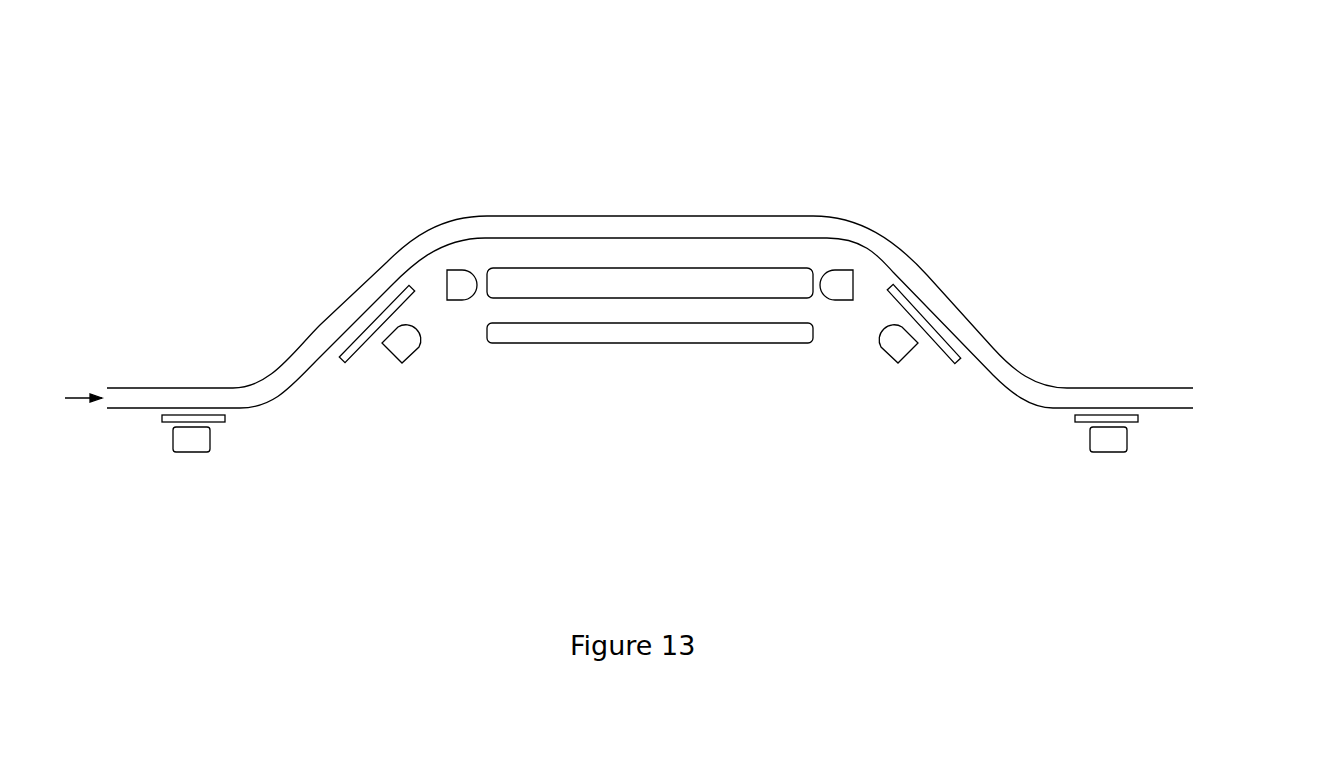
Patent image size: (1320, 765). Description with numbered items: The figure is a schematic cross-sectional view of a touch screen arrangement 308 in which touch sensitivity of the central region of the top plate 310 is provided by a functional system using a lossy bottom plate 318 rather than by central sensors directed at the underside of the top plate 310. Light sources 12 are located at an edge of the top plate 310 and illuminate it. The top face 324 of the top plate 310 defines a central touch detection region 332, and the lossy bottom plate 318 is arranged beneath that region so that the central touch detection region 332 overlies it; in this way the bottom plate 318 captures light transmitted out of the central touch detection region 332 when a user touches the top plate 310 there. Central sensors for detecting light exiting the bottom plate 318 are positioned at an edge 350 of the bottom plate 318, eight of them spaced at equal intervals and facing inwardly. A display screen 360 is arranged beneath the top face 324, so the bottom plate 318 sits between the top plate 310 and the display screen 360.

The touch screen arrangement 308 is at (310, 178).
The light source 12 is at (83, 399).
The display screen 360 is at (645, 335).
The lossy bottom plate 318 is at (725, 285).
The edge of the bottom plate 350 is at (813, 270).
The central touch detection region 332 is at (588, 215).
The top face 324 is at (692, 217).
The top plate 310 is at (1178, 398).